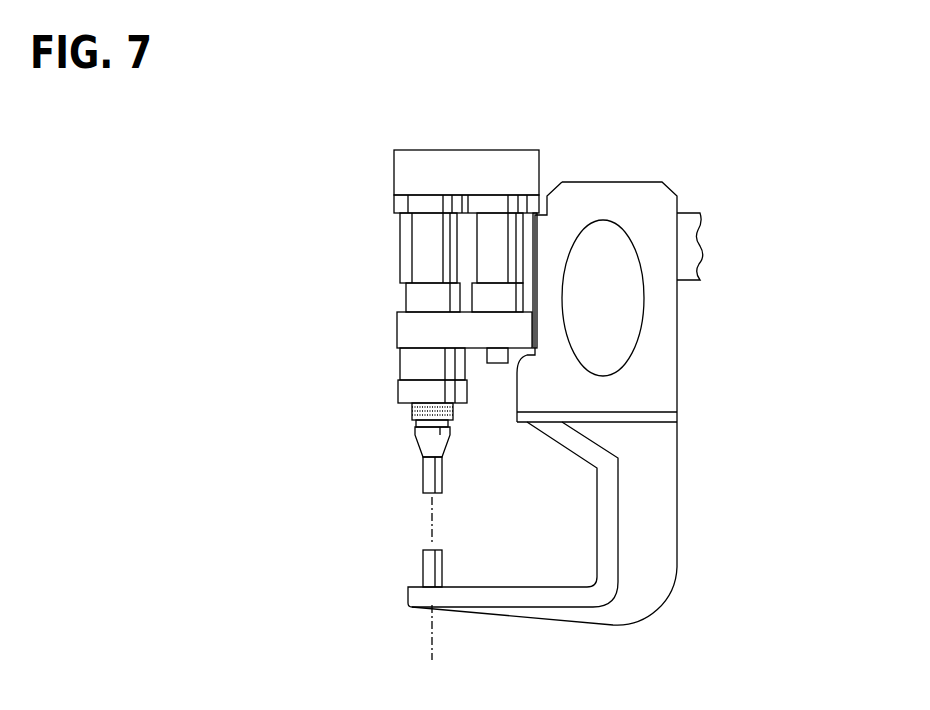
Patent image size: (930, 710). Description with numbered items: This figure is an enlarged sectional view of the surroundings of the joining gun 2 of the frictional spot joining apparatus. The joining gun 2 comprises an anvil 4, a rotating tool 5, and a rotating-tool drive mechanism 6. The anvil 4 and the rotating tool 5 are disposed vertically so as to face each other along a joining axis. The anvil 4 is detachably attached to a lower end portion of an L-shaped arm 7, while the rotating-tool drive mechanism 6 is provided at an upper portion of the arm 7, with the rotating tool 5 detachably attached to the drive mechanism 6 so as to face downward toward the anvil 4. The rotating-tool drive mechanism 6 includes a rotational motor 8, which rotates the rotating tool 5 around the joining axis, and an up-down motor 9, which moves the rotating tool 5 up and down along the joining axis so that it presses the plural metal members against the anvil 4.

The joining gun 2 is at (697, 380).
The anvil 4 is at (423, 585).
The rotating tool 5 is at (423, 482).
The rotating-tool drive mechanism 6 is at (370, 167).
The L-shaped arm 7 is at (676, 500).
The rotational motor 8 is at (423, 247).
The up-down motor 9 is at (503, 235).